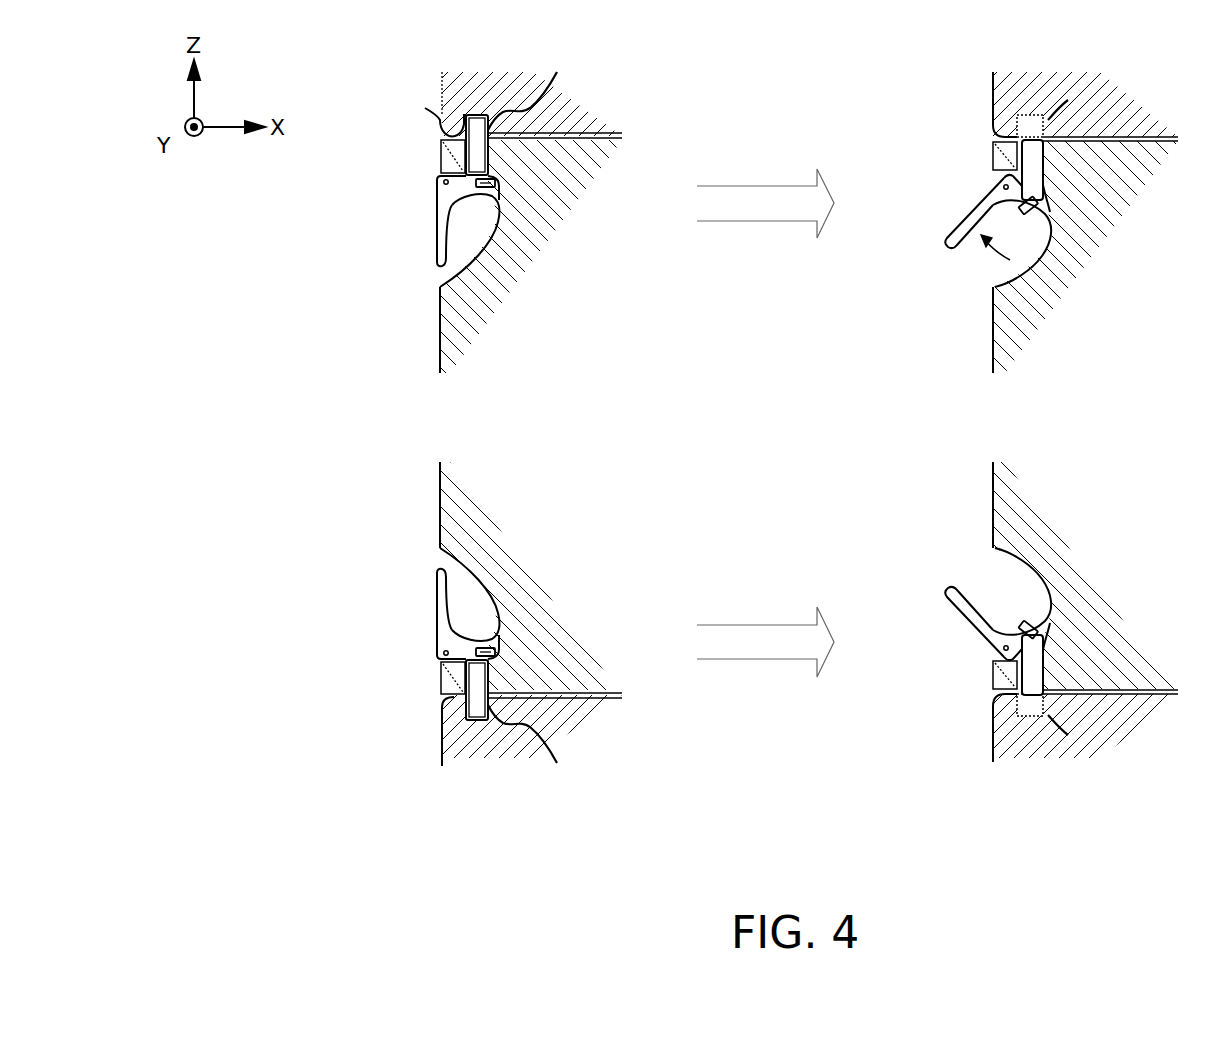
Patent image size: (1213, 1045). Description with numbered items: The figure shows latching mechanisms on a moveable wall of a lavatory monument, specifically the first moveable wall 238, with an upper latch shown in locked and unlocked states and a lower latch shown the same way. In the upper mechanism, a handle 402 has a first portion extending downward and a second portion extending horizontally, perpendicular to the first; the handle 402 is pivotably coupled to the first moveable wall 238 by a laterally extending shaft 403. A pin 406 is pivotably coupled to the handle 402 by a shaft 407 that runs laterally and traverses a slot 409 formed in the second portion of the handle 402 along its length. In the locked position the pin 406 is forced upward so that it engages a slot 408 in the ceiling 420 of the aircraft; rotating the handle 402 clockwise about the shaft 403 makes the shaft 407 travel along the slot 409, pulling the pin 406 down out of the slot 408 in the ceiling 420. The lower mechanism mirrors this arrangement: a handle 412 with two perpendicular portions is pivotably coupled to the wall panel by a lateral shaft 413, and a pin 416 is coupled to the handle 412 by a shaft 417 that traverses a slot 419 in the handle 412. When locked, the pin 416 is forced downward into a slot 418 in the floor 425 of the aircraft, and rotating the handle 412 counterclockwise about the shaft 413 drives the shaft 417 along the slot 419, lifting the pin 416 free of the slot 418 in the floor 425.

The first moveable wall 238 is at (517, 329).
The handle 402 is at (440, 260).
The shaft 403 is at (446, 181).
The pin 406 is at (425, 108).
The shaft 407 is at (492, 195).
The slot 408 is at (557, 72).
The slot 409 is at (494, 187).
The handle 412 is at (440, 625).
The shaft 413 is at (445, 655).
The pin 416 is at (472, 705).
The shaft 417 is at (488, 647).
The slot 418 is at (557, 763).
The slot 419 is at (494, 648).
The ceiling 420 is at (476, 68).
The floor 425 is at (472, 793).